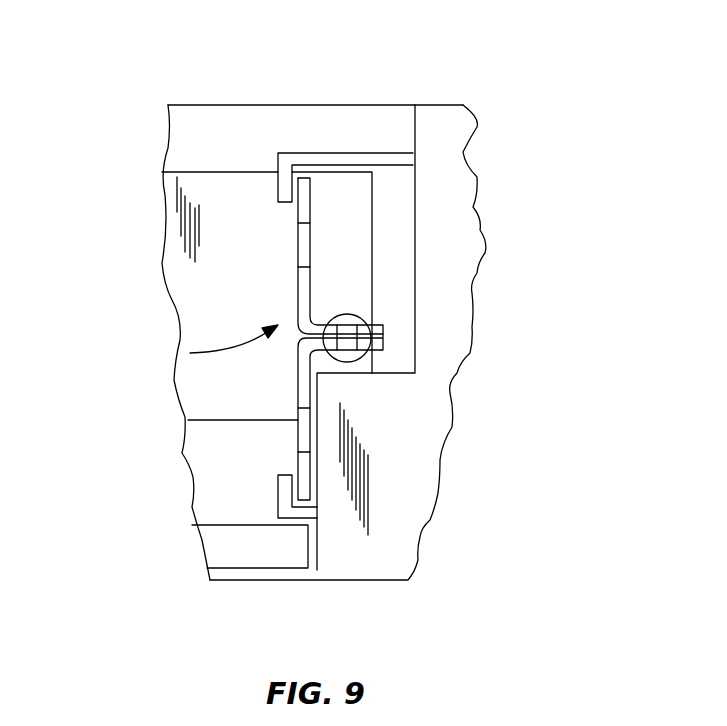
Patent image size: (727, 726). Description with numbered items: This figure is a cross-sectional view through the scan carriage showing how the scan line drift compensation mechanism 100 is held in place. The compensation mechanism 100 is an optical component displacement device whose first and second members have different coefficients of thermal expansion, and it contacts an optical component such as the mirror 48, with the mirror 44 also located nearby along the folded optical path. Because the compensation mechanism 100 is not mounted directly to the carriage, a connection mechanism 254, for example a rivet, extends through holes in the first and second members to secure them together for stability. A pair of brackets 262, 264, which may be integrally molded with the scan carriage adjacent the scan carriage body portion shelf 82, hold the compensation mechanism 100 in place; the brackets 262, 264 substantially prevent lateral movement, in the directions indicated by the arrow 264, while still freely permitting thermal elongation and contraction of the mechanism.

The bracket 262 is at (328, 158).
The mirror 48 is at (247, 277).
The connection mechanism 254 is at (348, 314).
The scan line drift compensation mechanism 100 is at (190, 353).
The shelf 82 is at (398, 373).
The bracket 264 is at (282, 497).
The mirror 44 is at (267, 560).